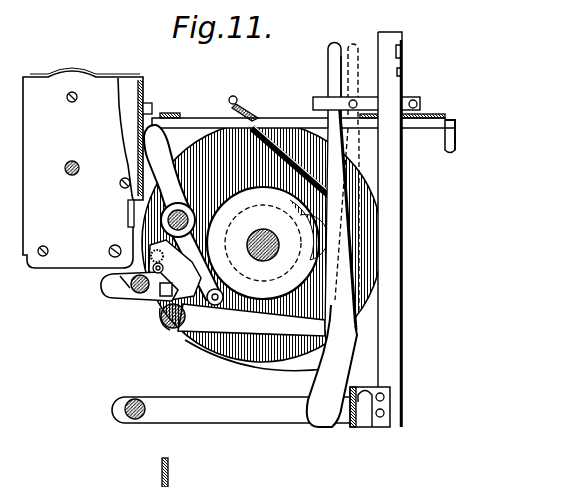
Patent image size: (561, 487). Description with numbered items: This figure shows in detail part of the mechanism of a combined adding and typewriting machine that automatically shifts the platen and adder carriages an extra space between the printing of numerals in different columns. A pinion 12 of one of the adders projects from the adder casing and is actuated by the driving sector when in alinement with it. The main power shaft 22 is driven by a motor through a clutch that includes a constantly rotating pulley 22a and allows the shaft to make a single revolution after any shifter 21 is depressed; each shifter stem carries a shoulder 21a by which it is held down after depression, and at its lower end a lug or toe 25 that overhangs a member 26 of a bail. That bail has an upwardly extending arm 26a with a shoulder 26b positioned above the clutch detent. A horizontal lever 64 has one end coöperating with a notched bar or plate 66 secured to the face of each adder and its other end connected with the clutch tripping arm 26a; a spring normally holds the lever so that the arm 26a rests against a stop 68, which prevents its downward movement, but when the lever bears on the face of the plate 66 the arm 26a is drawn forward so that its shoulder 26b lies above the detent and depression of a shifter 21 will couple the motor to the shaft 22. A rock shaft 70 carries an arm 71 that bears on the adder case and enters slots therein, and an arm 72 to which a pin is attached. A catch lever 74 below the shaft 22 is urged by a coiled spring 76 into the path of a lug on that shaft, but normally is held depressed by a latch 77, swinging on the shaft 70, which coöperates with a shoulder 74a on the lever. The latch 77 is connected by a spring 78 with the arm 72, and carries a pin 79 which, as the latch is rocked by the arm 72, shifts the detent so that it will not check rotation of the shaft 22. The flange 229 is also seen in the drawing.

The pinion 12 is at (128, 203).
The shifter 21 is at (390, 320).
The shoulder 21a is at (404, 74).
The shaft 22 is at (259, 238).
The pulley 22a is at (222, 120).
The lug or toe 25 is at (367, 416).
The member of bail 26 is at (345, 420).
The upwardly extending arm 26a is at (345, 246).
The shoulder 26b is at (333, 308).
The horizontal lever 64 is at (175, 112).
The notched bar or plate 66 is at (153, 109).
The stop 68 is at (316, 98).
The rock shaft 70 is at (163, 224).
The arm 71 is at (168, 130).
The arm 72 is at (126, 279).
The catch lever 74 is at (172, 327).
The shoulder 74a is at (166, 300).
The coiled spring 76 is at (152, 274).
The latch 77 is at (150, 256).
The spring 78 is at (140, 256).
The pin 79 is at (158, 293).
The drum flange 229 is at (198, 352).